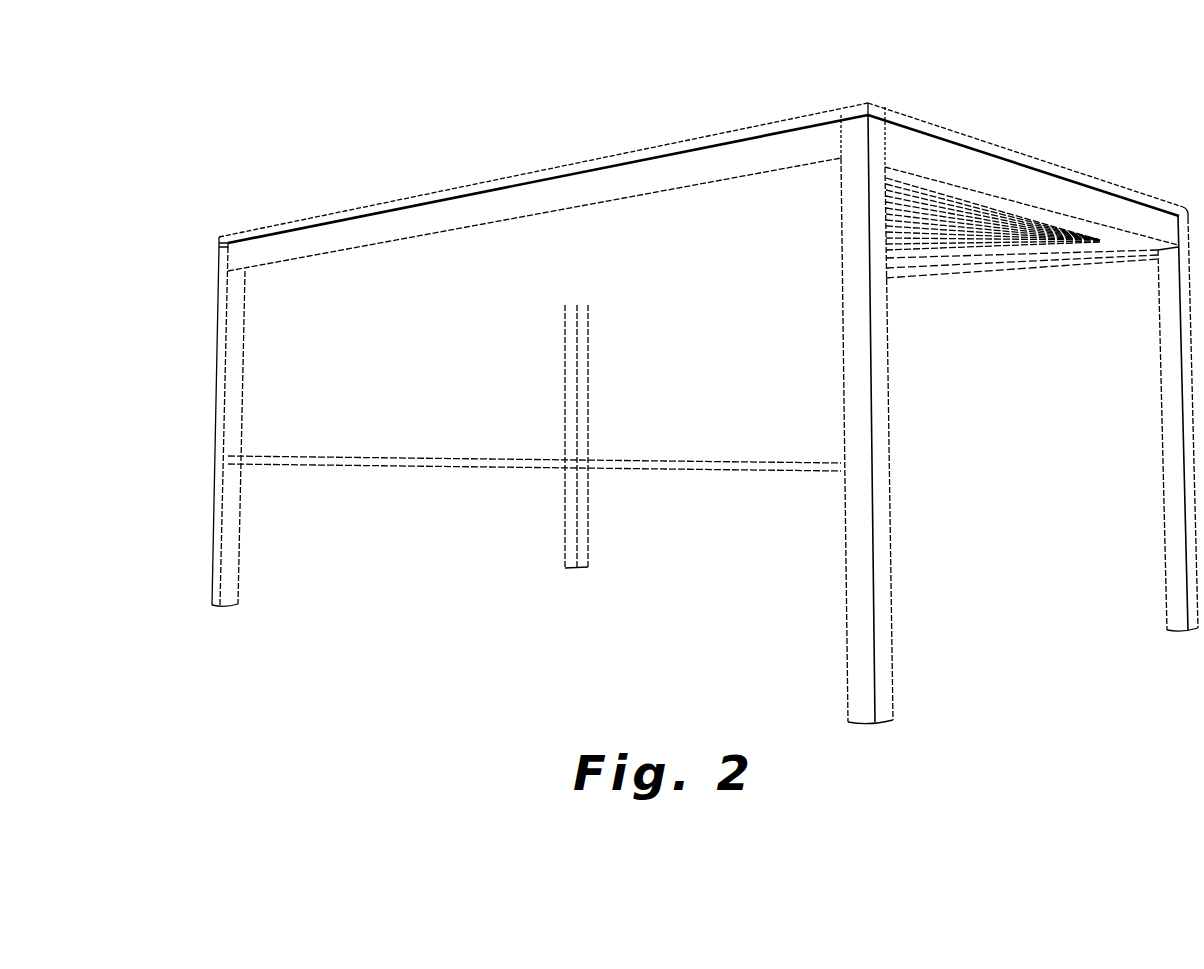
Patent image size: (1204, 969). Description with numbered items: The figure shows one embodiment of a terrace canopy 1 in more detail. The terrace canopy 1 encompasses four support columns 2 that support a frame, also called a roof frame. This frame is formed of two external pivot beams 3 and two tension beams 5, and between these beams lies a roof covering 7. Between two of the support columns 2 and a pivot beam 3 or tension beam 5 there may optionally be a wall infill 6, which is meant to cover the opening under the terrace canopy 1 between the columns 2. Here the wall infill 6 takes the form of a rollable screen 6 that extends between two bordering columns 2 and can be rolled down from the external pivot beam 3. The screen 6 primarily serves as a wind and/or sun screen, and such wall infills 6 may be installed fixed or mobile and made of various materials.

The terrace canopy 1 is at (664, 112).
The support column 2 is at (218, 580).
The external pivot beam 3 is at (407, 207).
The tension beam 5 is at (1007, 152).
The wall infill 6 is at (602, 443).
The roof covering 7 is at (947, 228).